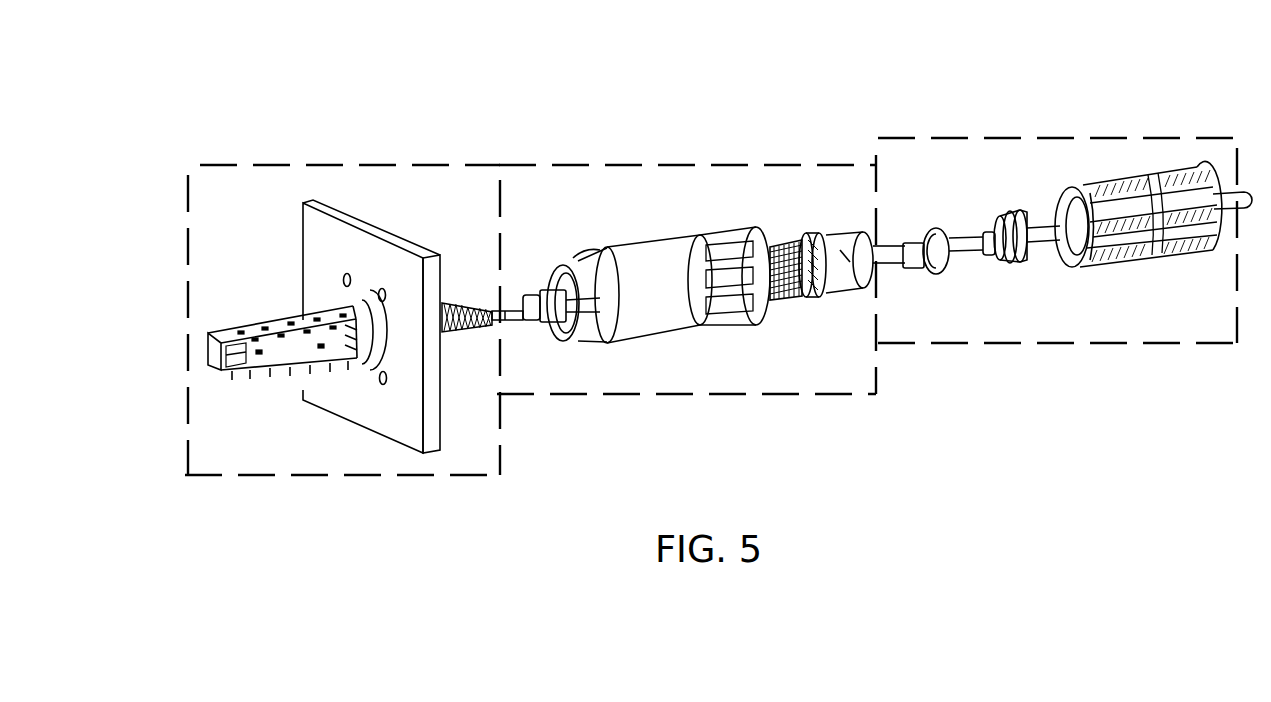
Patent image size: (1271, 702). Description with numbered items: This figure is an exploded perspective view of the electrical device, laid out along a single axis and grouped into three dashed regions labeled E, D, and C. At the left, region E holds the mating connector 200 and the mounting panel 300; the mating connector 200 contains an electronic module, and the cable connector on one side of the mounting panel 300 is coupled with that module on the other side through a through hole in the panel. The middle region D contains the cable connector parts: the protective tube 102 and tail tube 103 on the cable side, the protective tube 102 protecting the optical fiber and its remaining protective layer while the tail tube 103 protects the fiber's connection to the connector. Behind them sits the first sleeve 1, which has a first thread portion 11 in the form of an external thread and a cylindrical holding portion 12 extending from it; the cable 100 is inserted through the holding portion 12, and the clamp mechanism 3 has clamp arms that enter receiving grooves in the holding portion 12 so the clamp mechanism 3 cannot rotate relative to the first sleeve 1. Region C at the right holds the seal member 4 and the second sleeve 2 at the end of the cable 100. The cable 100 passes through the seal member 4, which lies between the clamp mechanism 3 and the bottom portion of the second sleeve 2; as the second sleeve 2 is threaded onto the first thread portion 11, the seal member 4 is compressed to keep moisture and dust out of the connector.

The cable 100 is at (1142, 241).
The first sleeve 1 is at (677, 260).
The second sleeve 2 is at (1107, 183).
The clamp mechanism 3 is at (937, 230).
The seal member 4 is at (1033, 257).
The first thread portion 11 is at (810, 292).
The holding portion 12 is at (838, 250).
The protective tube 102 is at (550, 272).
The tail tube 103 is at (473, 322).
The mating connector 200 is at (287, 323).
The mounting panel 300 is at (375, 233).
The region C is at (1153, 138).
The region D is at (760, 165).
The region E is at (443, 165).